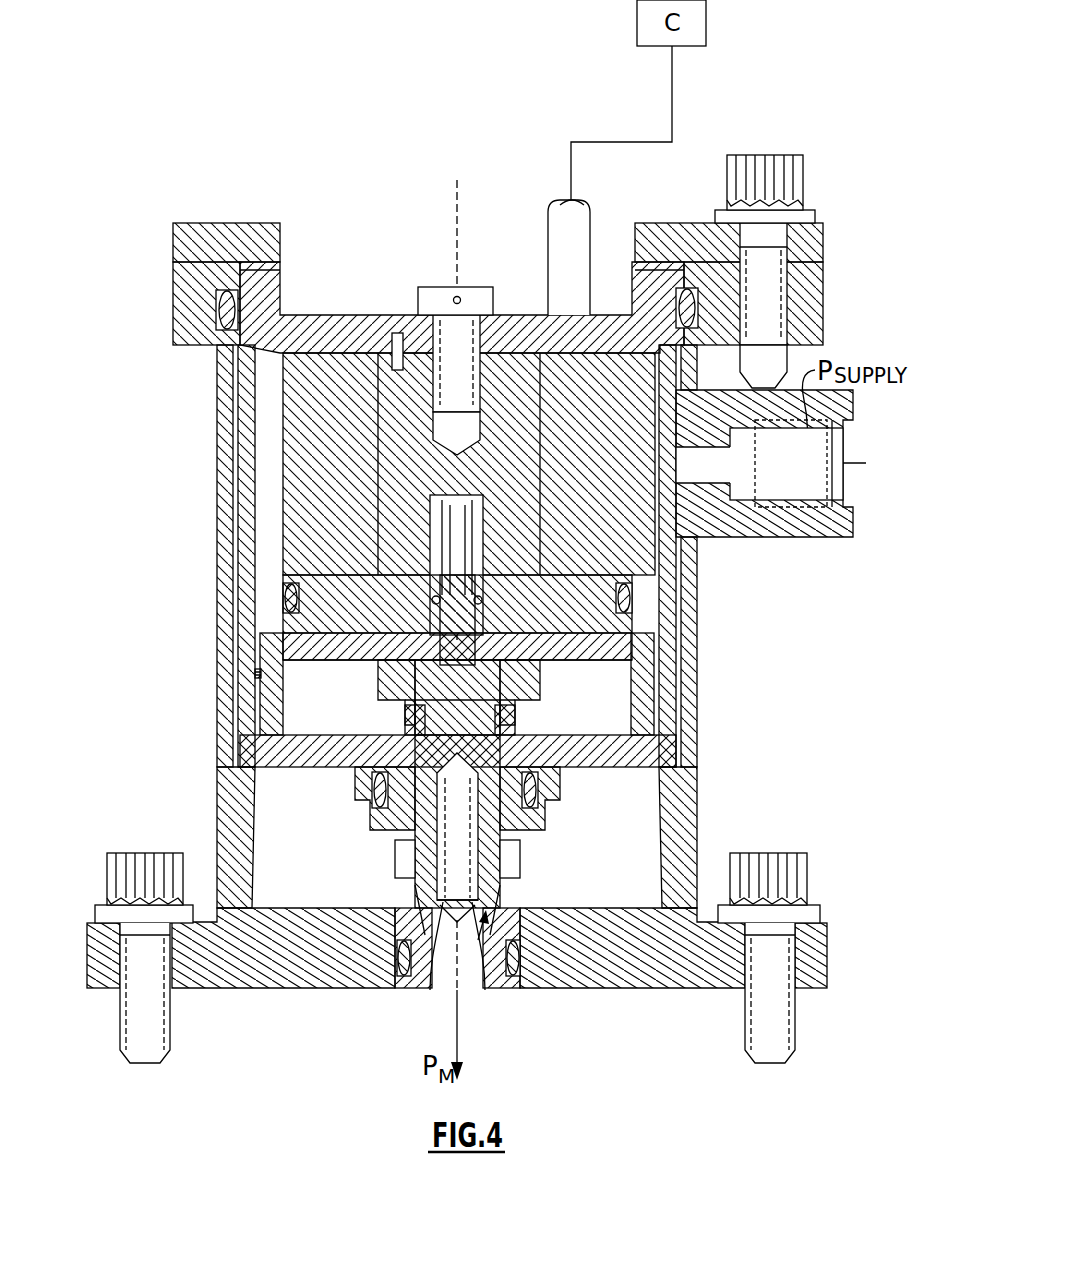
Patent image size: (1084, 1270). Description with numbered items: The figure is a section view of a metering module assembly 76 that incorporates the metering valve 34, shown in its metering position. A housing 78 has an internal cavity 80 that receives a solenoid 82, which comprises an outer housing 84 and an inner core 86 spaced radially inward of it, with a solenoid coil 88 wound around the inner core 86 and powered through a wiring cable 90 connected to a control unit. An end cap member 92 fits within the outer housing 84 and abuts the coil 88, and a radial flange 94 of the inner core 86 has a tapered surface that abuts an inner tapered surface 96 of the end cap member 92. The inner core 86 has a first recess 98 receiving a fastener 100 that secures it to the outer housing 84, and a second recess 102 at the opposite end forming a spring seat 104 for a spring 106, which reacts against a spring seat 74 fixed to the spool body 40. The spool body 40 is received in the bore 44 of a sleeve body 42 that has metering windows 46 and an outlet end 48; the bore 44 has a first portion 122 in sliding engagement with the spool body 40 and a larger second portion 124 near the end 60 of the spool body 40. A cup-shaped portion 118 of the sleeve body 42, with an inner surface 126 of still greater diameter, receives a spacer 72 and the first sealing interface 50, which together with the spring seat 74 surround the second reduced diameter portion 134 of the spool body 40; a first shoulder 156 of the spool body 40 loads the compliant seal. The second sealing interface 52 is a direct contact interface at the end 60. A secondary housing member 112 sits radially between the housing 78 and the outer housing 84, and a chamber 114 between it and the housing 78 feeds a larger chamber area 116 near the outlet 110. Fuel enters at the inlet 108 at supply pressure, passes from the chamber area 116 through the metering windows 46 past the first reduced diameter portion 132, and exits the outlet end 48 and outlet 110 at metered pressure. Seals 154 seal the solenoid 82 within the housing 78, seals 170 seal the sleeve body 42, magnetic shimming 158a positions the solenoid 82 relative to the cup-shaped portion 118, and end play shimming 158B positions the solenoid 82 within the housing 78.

The metering valve 34 is at (666, 851).
The spool body 40 is at (535, 805).
The sleeve body 42 is at (517, 828).
The bore 44 is at (517, 980).
The metering window 46 is at (395, 858).
The outlet end 48 is at (404, 985).
The first sealing interface 50 is at (378, 710).
The second sealing interface 52 is at (470, 975).
The end of the spool body 60 is at (438, 965).
The spacer 72 is at (520, 690).
The spring seat 74 is at (547, 660).
The metering module assembly 76 is at (498, 167).
The housing 78 is at (217, 532).
The internal cavity 80 is at (243, 374).
The solenoid 82 is at (352, 250).
The outer housing 84 is at (527, 320).
The inner core 86 is at (510, 387).
The solenoid coil 88 is at (653, 403).
The wiring cable 90 is at (588, 222).
The end cap member 92 is at (608, 623).
The radial flange 94 is at (283, 640).
The inner tapered surface 96 is at (628, 600).
The first recess 98 is at (432, 364).
The fastener 100 is at (474, 288).
The second recess 102 is at (487, 540).
The spring seat 104 is at (437, 497).
The spring 106 is at (437, 562).
The inlet 108 is at (853, 492).
The outlet 110 is at (396, 985).
The secondary housing member 112 is at (665, 685).
The chamber 114 is at (680, 733).
The chamber area 116 is at (243, 805).
The cup-shaped portion 118 is at (260, 708).
The first portion 122 is at (390, 823).
The second portion 124 is at (517, 903).
The inner surface 126 is at (283, 708).
The first reduced diameter portion 132 is at (460, 975).
The second reduced diameter portion 134 is at (376, 664).
The seals 154 is at (225, 310).
The first shoulder 156 is at (398, 962).
The magnetic shimming 158a is at (258, 675).
The end play shimming 158B is at (283, 262).
The seals 170 is at (374, 784).